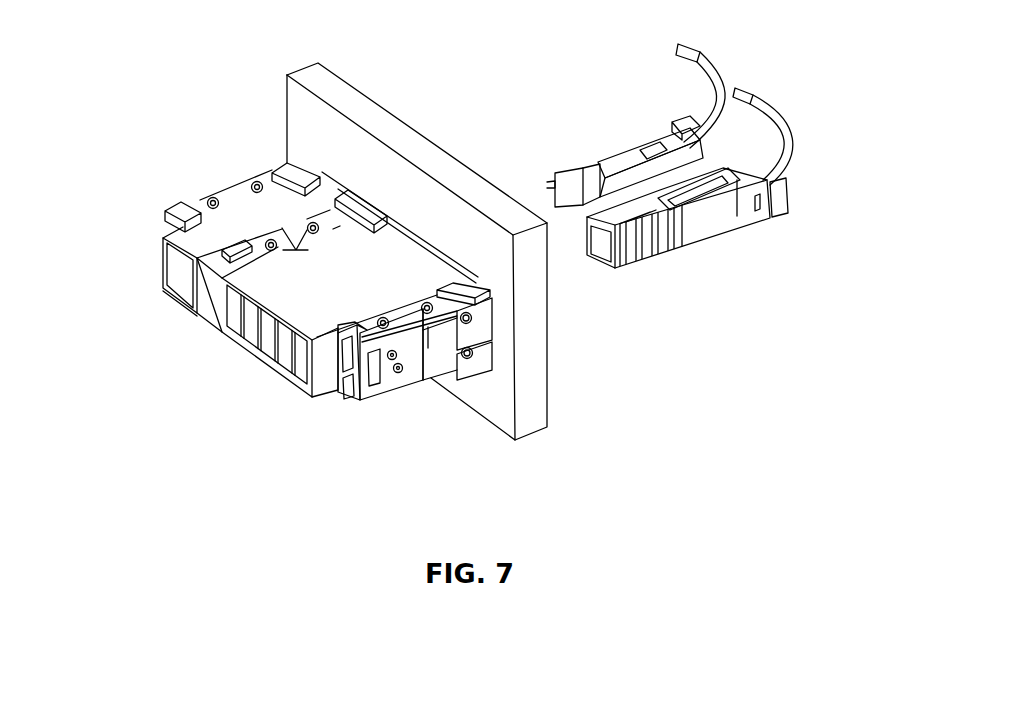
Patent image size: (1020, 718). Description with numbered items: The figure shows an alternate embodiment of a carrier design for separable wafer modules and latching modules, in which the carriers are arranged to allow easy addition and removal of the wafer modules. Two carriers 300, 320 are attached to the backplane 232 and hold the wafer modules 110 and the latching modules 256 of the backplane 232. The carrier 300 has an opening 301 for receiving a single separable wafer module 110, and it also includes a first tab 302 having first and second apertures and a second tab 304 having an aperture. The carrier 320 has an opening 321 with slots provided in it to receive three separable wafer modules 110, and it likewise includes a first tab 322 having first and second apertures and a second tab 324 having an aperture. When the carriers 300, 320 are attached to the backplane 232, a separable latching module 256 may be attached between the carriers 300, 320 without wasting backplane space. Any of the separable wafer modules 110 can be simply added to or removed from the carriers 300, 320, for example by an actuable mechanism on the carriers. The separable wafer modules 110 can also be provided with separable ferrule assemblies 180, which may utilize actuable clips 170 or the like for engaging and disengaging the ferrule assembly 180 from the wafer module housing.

The separable wafer module 110 is at (712, 228).
The actuable clip 170 is at (690, 127).
The separable ferrule assembly 180 is at (627, 153).
The backplane 232 is at (357, 98).
The separable latching module 256 is at (361, 398).
The carrier 300 is at (98, 214).
The opening 301 is at (163, 292).
The first tab 302 is at (248, 193).
The second tab 304 is at (252, 243).
The carrier 320 is at (325, 449).
The opening 321 is at (256, 350).
The first tab 322 is at (402, 317).
The second tab 324 is at (333, 228).